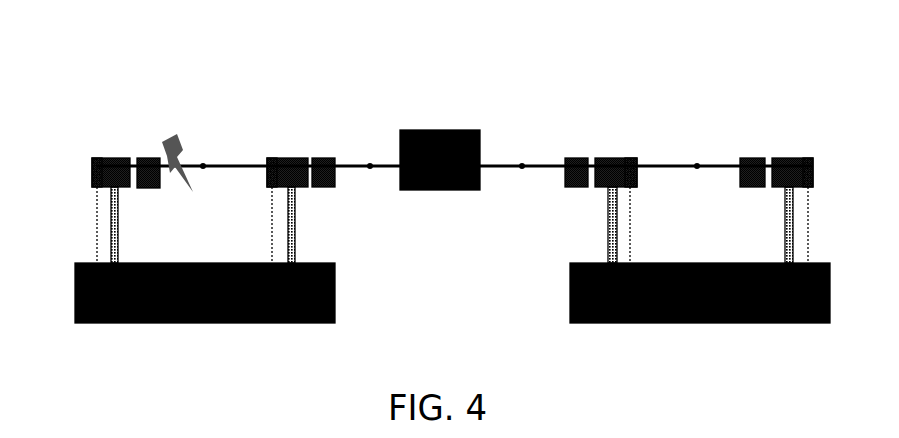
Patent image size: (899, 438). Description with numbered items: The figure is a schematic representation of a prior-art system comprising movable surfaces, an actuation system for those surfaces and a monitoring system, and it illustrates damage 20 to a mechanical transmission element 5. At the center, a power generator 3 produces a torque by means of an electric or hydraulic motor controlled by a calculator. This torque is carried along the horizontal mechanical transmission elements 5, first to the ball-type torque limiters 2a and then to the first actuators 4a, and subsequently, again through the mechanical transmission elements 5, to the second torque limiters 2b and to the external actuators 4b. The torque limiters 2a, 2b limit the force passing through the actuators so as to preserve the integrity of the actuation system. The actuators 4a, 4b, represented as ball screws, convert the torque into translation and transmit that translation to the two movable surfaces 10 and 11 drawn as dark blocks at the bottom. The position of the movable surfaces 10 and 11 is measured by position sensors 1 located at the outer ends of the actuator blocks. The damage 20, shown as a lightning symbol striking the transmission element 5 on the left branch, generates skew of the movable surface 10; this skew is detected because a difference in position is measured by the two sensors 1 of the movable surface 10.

The position sensor 1 is at (92, 173).
The torque limiter 2a is at (323, 158).
The second torque limiter 2b is at (147, 158).
The power generator 3 is at (440, 130).
The first actuator 4a is at (290, 158).
The external actuator 4b is at (115, 158).
The mechanical transmission element 5 is at (203, 166).
The movable surface 10 is at (333, 293).
The movable surface 11 is at (570, 293).
The damage 20 is at (178, 152).